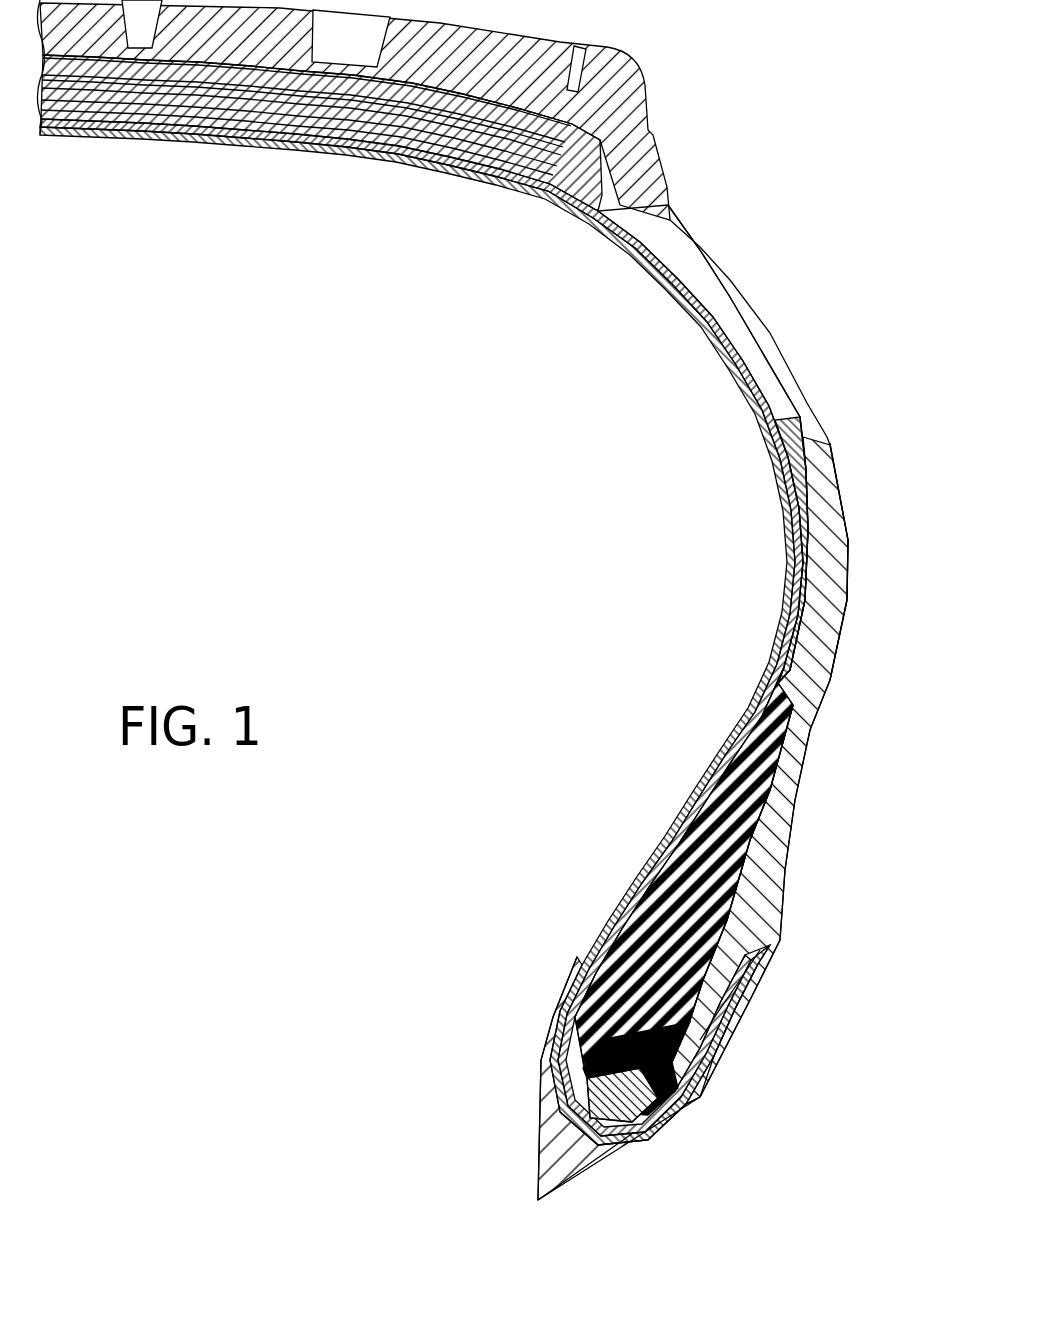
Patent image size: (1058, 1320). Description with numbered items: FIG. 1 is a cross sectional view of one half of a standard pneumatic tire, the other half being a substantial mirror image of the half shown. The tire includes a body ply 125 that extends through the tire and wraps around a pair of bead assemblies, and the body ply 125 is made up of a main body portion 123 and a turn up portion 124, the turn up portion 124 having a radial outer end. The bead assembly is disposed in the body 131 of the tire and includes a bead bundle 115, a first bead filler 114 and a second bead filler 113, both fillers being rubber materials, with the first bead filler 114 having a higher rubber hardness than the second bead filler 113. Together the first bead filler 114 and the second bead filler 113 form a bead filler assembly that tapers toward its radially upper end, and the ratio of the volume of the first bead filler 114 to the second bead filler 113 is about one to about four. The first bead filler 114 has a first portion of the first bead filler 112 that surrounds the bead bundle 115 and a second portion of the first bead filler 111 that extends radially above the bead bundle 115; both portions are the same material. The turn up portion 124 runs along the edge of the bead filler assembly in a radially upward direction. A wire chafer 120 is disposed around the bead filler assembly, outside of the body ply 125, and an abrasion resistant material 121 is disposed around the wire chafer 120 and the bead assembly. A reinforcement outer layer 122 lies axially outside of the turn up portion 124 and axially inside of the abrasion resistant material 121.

The second portion of the first bead filler 111 is at (580, 1053).
The first portion of the first bead filler 112 is at (692, 1077).
The second bead filler 113 is at (700, 843).
The first bead filler 114 is at (588, 957).
The bead bundle 115 is at (670, 1110).
The wire chafer 120 is at (643, 1137).
The abrasion resistant material 121 is at (732, 1022).
The reinforcement outer layer 122 is at (723, 933).
The main body portion 123 is at (577, 1008).
The turn up portion 124 is at (710, 992).
The body ply 125 is at (800, 566).
The body 131 is at (810, 407).